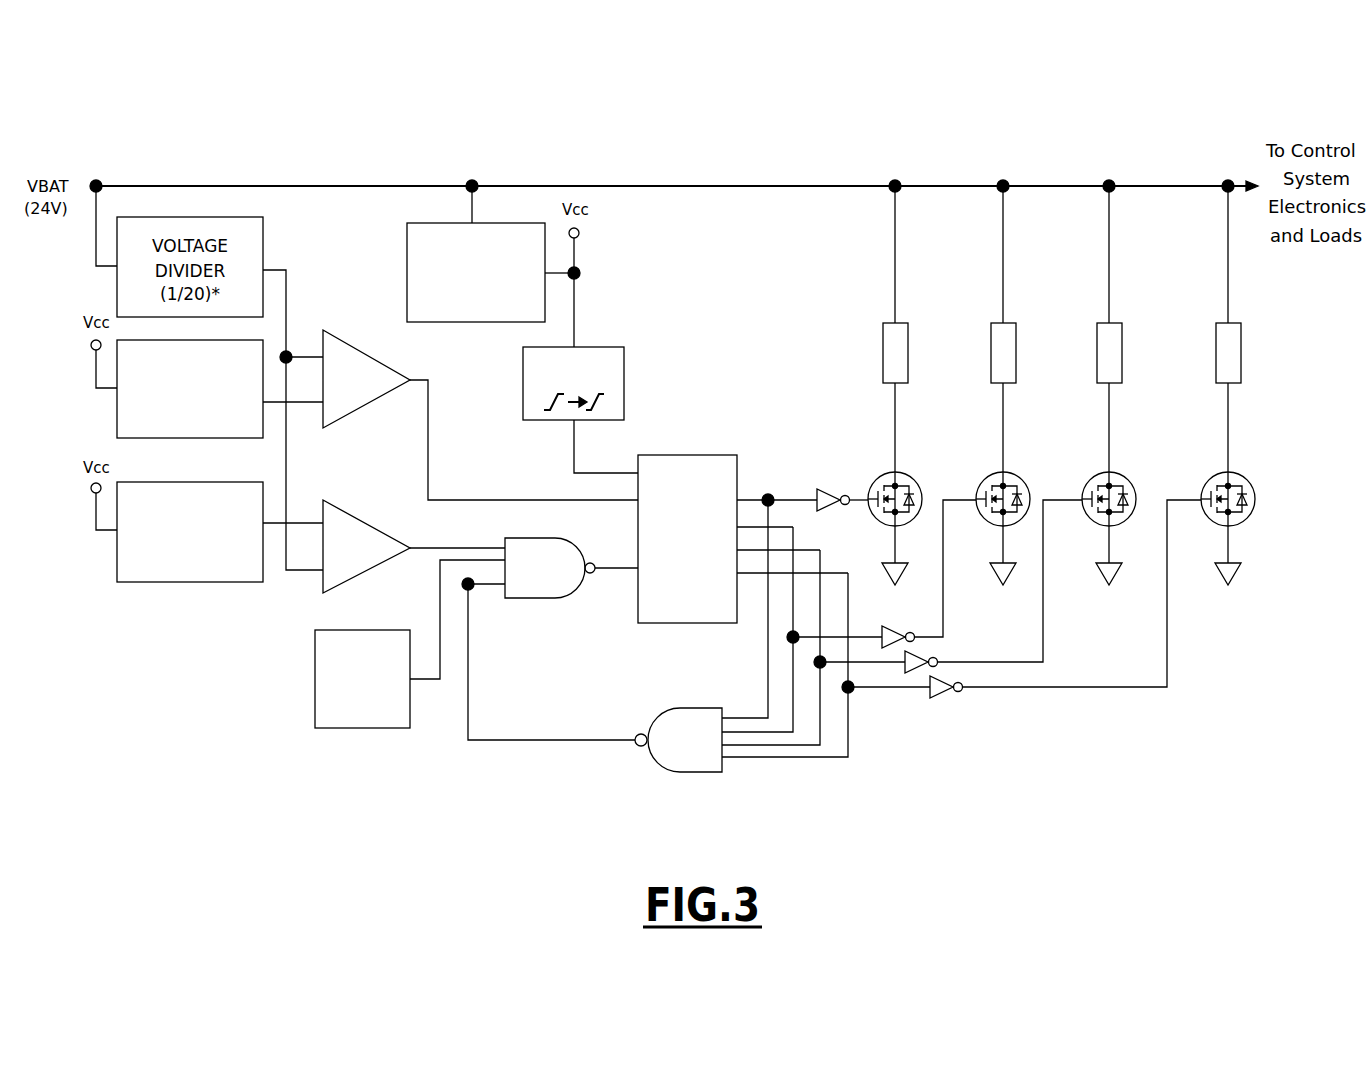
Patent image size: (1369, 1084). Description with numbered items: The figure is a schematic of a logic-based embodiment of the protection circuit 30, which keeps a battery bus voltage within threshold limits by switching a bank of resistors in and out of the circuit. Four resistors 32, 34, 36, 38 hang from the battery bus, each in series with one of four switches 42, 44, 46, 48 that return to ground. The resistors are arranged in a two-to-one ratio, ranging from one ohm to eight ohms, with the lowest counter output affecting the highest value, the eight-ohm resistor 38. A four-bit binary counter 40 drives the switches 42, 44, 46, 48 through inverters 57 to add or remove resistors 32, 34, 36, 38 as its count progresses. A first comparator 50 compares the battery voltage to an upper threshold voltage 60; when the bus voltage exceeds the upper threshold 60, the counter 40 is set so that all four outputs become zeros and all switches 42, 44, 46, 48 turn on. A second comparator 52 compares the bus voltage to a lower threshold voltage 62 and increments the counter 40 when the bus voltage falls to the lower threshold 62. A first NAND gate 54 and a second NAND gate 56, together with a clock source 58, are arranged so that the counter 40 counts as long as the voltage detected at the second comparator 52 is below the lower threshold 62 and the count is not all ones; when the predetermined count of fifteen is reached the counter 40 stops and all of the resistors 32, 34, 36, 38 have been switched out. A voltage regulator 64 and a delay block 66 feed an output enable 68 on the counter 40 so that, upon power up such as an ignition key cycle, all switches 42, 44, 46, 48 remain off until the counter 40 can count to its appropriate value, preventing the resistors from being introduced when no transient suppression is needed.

The protection circuit 30 is at (1097, 154).
The resistor 32 is at (883, 328).
The resistor 34 is at (991, 328).
The resistor 36 is at (1097, 328).
The resistor 38 is at (1216, 328).
The counter 40 is at (737, 466).
The switch 42 is at (905, 477).
The switch 44 is at (1013, 477).
The switch 46 is at (1119, 477).
The switch 48 is at (1238, 477).
The first comparator 50 is at (348, 343).
The second comparator 52 is at (347, 506).
The first NAND gate 54 is at (547, 600).
The second NAND gate 56 is at (696, 708).
The inverter 57 is at (828, 489).
The clock source 58 is at (360, 730).
The upper threshold voltage 60 is at (117, 424).
The lower threshold voltage 62 is at (117, 572).
The voltage regulator 64 is at (407, 256).
The delay block 66 is at (624, 372).
The output enable 68 is at (652, 464).